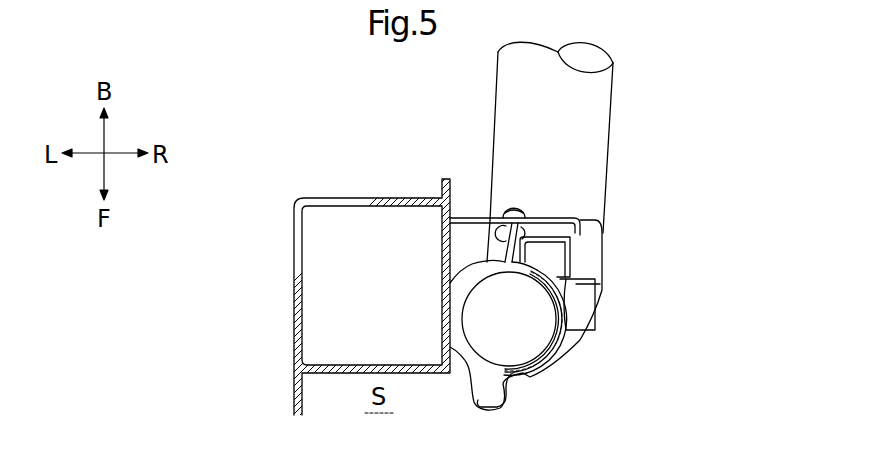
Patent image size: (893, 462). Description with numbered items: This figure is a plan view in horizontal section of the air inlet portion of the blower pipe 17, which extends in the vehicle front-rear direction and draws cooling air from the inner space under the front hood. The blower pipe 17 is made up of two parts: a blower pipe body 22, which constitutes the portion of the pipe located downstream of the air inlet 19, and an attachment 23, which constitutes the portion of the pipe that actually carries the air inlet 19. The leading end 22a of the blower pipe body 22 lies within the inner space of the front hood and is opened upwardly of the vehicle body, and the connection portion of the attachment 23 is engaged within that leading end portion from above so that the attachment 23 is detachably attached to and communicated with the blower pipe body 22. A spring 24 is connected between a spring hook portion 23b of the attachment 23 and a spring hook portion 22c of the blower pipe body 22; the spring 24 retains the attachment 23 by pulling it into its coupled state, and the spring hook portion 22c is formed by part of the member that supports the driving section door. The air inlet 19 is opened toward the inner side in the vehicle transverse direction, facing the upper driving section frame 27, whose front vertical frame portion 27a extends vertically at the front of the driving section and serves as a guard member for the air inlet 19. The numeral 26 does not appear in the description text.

The blower pipe 17 is at (628, 152).
The blower pipe body 22 is at (628, 152).
The bracket member 26 is at (605, 152).
The leading end 22a is at (562, 344).
The spring hook portion 22c is at (563, 220).
The attachment device 23 is at (557, 311).
The spring hook portion 23b is at (528, 243).
The spring 24 is at (512, 209).
The air inlet 19 is at (483, 322).
The upper driving section frame 27 is at (475, 261).
The front vertical frame portion 27a is at (340, 197).